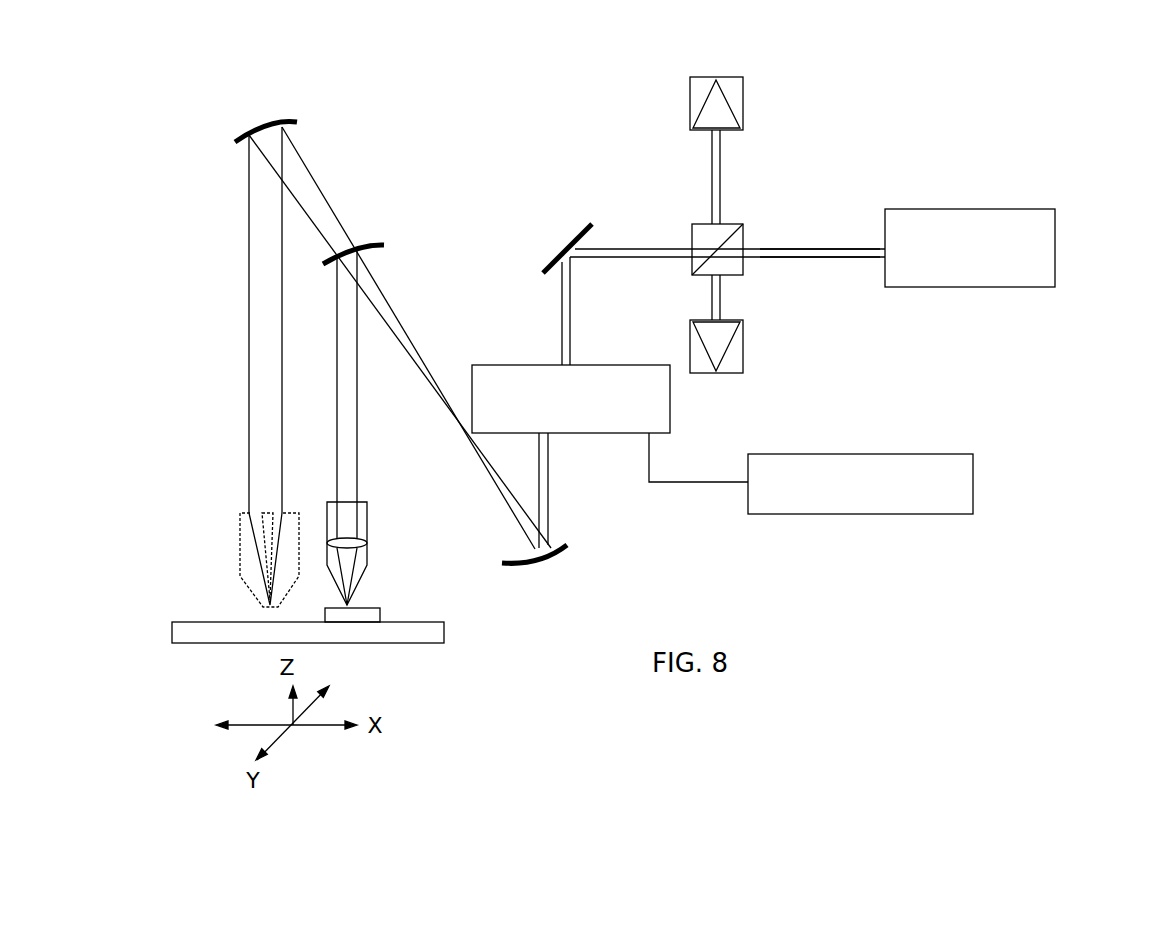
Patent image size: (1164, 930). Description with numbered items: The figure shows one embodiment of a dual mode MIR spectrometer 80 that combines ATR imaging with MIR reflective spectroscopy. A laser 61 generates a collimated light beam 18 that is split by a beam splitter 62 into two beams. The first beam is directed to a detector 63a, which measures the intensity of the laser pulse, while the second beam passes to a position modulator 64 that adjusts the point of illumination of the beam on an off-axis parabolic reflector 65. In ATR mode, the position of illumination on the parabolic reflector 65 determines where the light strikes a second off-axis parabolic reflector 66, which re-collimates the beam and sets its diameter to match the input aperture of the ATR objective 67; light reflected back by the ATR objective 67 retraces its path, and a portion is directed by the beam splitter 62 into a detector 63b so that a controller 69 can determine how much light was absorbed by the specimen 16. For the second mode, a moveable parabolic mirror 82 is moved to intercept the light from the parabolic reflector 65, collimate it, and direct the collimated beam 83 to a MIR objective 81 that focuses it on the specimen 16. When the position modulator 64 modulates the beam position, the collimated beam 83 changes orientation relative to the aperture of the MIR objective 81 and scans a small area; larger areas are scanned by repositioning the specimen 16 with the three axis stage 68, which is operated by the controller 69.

The spectrometer 80 is at (1058, 116).
The laser 61 is at (950, 283).
The collimated light beam 18 is at (838, 253).
The beam splitter 62 is at (745, 268).
The detector 63a is at (745, 364).
The detector 63b is at (745, 95).
The position modulator 64 is at (503, 365).
The off-axis parabolic reflector 65 is at (512, 568).
The off-axis parabolic reflector 66 is at (264, 122).
The moveable parabolic mirror 82 is at (368, 246).
The collimated beam 83 is at (360, 423).
The MIR objective 81 is at (367, 528).
The ATR objective 67 is at (248, 528).
The specimen 16 is at (381, 616).
The three axis stage 68 is at (383, 640).
The controller 69 is at (900, 515).